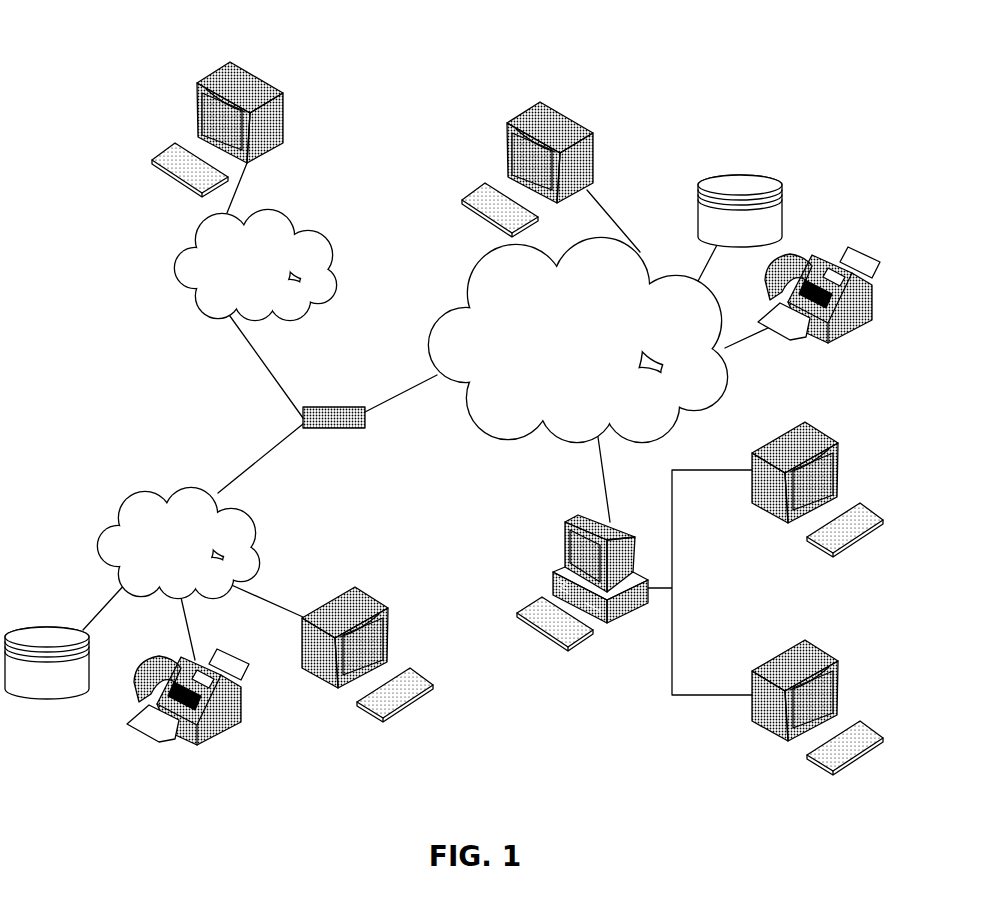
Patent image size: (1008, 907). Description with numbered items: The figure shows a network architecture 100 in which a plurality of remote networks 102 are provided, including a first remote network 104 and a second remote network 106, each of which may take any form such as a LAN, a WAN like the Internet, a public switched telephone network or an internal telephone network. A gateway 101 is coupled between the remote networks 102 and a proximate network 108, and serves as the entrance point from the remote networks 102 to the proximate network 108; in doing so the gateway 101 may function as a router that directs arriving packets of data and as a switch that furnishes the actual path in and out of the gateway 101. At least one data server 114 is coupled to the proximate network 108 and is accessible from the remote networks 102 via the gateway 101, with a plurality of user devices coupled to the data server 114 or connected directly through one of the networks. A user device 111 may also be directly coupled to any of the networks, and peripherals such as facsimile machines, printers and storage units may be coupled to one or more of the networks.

The architecture 100 is at (137, 47).
The gateway 101 is at (315, 405).
The remote networks 102 is at (165, 320).
The first remote network 104 is at (105, 518).
The second remote network 106 is at (323, 233).
The proximate network 108 is at (687, 408).
The user device 111 is at (592, 133).
The data server 114 is at (565, 533).